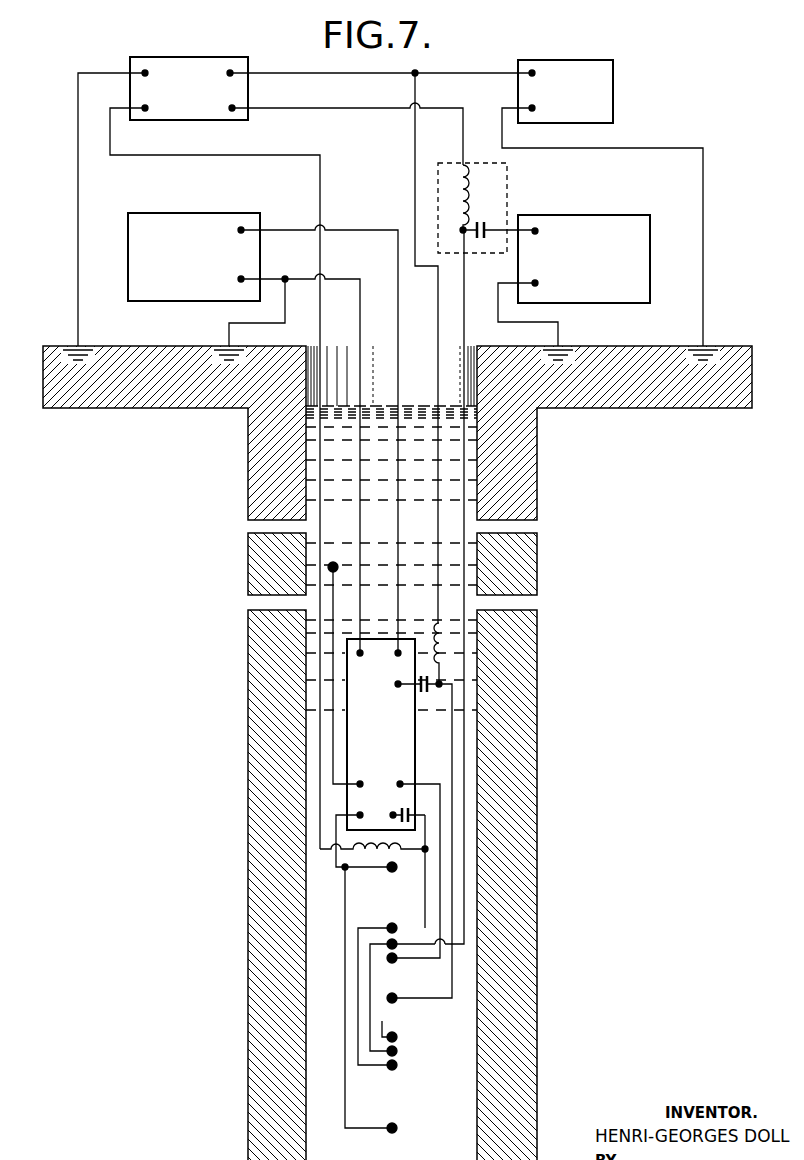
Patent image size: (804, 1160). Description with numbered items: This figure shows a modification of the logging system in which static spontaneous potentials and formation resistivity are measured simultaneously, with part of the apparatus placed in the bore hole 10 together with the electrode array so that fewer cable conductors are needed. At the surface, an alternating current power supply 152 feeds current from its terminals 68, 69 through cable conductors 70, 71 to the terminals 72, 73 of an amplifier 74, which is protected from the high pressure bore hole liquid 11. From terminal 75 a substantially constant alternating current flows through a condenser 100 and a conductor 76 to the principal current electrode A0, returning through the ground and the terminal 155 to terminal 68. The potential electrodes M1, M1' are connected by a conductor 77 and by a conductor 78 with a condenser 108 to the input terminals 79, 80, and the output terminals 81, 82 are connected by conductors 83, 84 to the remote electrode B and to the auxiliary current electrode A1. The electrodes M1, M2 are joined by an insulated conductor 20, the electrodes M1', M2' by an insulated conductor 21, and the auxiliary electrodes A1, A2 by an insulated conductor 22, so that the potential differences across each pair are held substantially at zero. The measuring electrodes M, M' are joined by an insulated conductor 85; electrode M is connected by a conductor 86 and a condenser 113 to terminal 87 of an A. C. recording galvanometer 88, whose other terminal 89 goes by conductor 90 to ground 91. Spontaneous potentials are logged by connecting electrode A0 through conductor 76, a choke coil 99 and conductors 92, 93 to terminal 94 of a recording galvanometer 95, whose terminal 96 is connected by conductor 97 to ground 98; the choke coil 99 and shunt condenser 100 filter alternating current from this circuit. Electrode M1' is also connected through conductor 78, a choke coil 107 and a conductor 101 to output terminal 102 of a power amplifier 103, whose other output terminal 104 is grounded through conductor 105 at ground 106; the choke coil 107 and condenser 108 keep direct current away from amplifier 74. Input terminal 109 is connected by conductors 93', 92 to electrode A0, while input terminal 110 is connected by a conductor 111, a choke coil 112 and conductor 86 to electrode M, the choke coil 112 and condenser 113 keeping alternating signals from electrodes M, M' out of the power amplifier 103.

The bore hole 10 is at (478, 755).
The bore hole liquid 11 is at (412, 404).
The insulated conductor 20 is at (382, 1021).
The insulated conductor 21 is at (357, 958).
The insulated conductor 22 is at (345, 1060).
The terminal 68 is at (245, 277).
The terminal 69 is at (241, 227).
The cable conductor 70 is at (360, 318).
The cable conductor 71 is at (398, 305).
The terminal 72 is at (360, 656).
The terminal 73 is at (398, 656).
The amplifier 74 is at (365, 722).
The terminal 75 is at (398, 686).
The conductor 76 is at (452, 803).
The conductor 77 is at (447, 858).
The conductor 78 is at (425, 888).
The input terminal 79 is at (401, 781).
The input terminal 80 is at (393, 812).
The output terminal 81 is at (361, 781).
The output terminal 82 is at (361, 812).
The conductor 83 is at (333, 753).
The conductor 84 is at (335, 860).
The insulated conductor 85 is at (370, 995).
The conductor 86 is at (465, 907).
The terminal 87 is at (535, 228).
The A. C. recording galvanometer 88 is at (594, 215).
The terminal 89 is at (538, 283).
The conductor 90 is at (528, 320).
The ground 91 is at (572, 346).
The conductor 92 is at (438, 315).
The conductor 93 is at (472, 62).
The conductor 93' is at (322, 60).
The terminal 94 is at (532, 70).
The recording galvanometer 95 is at (607, 87).
The terminal 96 is at (533, 112).
The conductor 97 is at (705, 230).
The ground 98 is at (712, 346).
The choke coil 99 is at (447, 640).
The condenser 100 is at (424, 694).
The conductor 101 is at (321, 183).
The output terminal 102 is at (146, 112).
The power amplifier 103 is at (191, 60).
The output terminal 104 is at (145, 68).
The conductor 105 is at (78, 202).
The ground 106 is at (62, 345).
The choke coil 107 is at (375, 855).
The condenser 108 is at (411, 808).
The input terminal 109 is at (231, 68).
The input terminal 110 is at (232, 112).
The conductor 111 is at (463, 137).
The choke coil 112 is at (468, 190).
The condenser 113 is at (483, 240).
The alternating current power supply 152 is at (181, 213).
The terminal 155 is at (222, 345).
The remote electrode B is at (335, 563).
The auxiliary current electrode A1 is at (397, 867).
The auxiliary current electrode A2 is at (397, 1128).
The principal current electrode A0 is at (396, 1001).
The potential electrode M is at (380, 926).
The potential electrode M' is at (407, 1055).
The potential electrode M1 is at (407, 967).
The potential electrode M1' is at (405, 913).
The potential electrode M2 is at (407, 1040).
The potential electrode M2' is at (406, 1073).